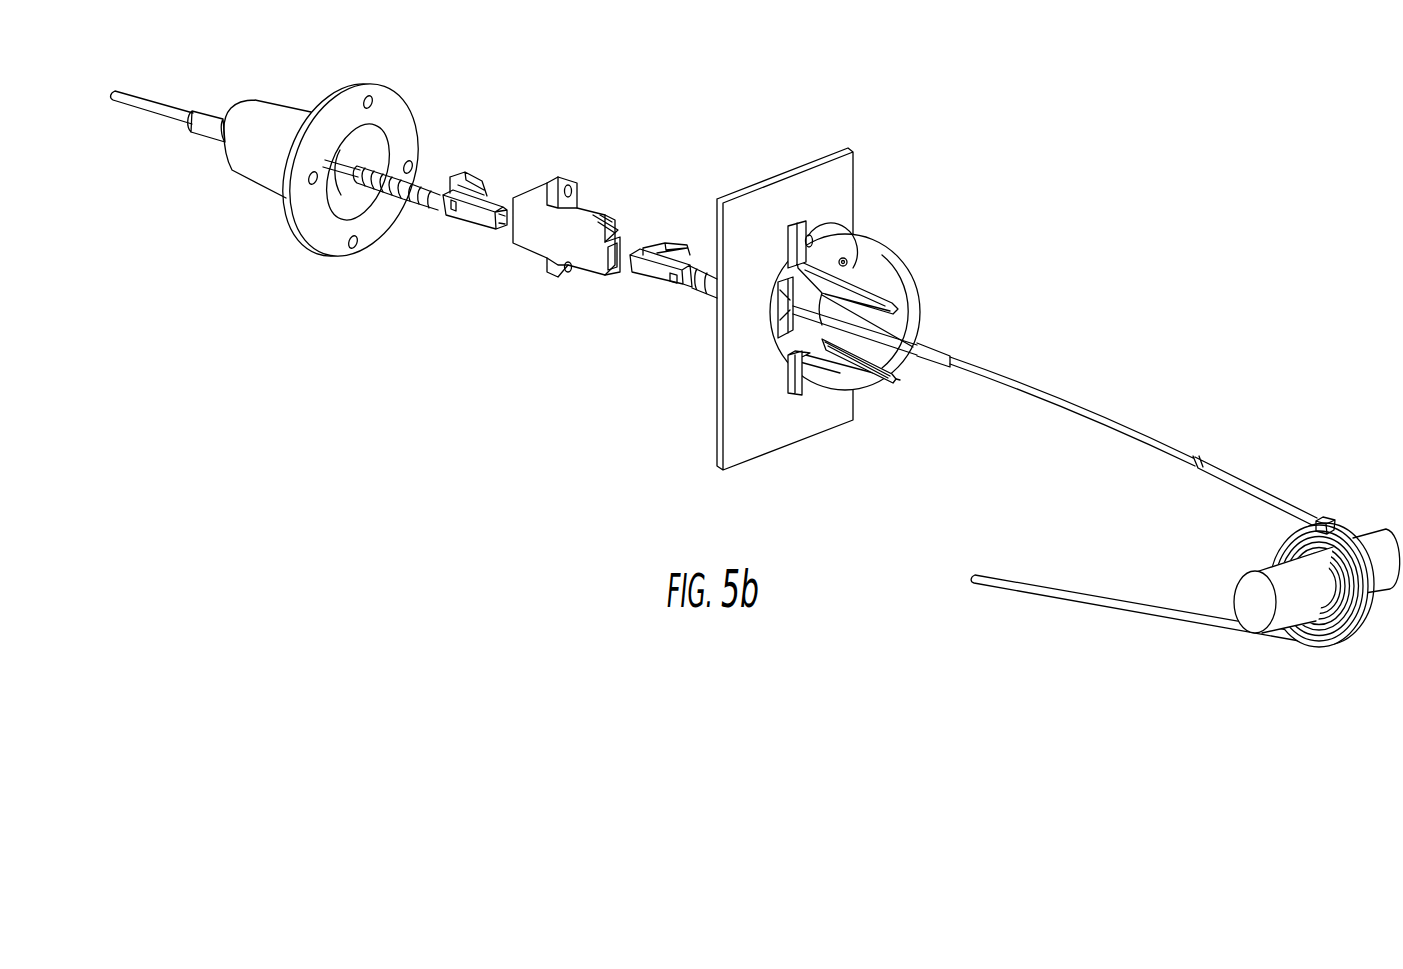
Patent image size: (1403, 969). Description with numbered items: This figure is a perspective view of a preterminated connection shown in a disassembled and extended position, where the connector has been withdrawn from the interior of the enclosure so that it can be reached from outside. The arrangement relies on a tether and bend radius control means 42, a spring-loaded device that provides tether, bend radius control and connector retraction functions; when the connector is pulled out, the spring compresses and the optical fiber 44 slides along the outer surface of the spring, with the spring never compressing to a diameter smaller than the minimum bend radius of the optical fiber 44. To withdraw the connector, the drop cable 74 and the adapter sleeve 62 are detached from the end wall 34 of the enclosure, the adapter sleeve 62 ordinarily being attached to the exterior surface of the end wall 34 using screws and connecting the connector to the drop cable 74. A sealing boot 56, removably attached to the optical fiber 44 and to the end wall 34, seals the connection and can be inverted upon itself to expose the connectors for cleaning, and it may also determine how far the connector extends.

The drop cable 74 is at (148, 101).
The sealing boot 56 is at (268, 120).
The adapter sleeve 62 is at (582, 230).
The end wall 34 is at (820, 183).
The optical fiber 44 is at (1078, 402).
The tether and bend radius control means 42 is at (1349, 508).